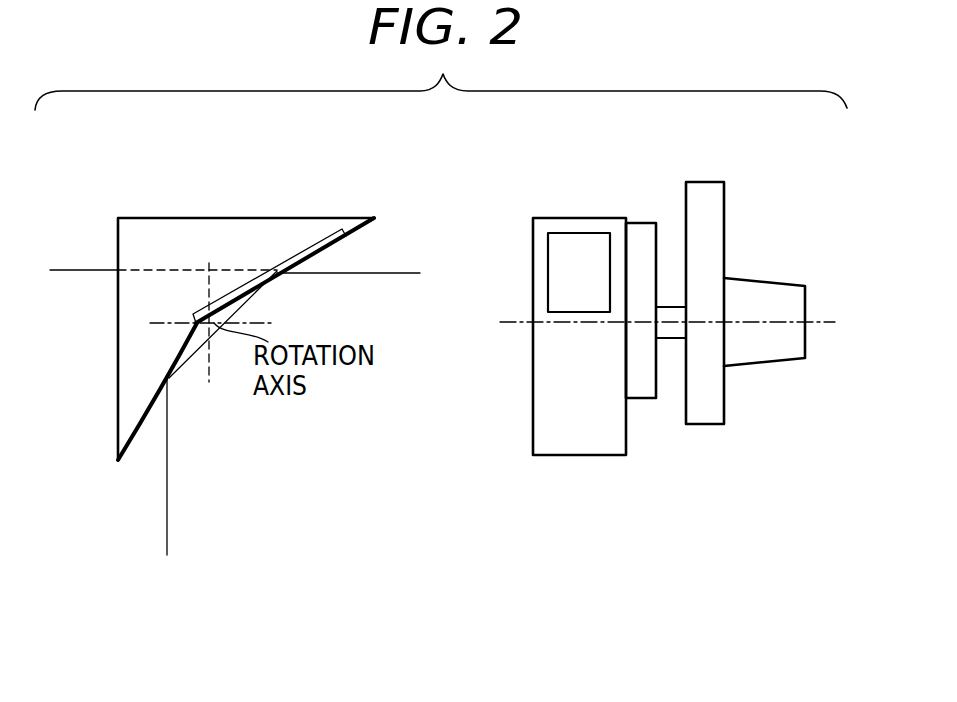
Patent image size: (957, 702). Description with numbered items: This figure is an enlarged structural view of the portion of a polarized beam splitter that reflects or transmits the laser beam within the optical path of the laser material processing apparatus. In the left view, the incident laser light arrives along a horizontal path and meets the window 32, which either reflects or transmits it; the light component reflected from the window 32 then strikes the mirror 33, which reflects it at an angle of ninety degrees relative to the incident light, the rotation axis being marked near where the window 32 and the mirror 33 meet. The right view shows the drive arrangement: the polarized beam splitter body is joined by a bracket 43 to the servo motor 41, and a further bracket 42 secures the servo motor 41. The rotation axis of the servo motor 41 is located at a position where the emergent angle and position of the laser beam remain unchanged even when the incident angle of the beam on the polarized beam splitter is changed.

The window 32 is at (330, 237).
The mirror 33 is at (155, 404).
The servo motor 41 is at (770, 280).
The bracket 42 is at (703, 179).
The bracket 43 is at (641, 223).